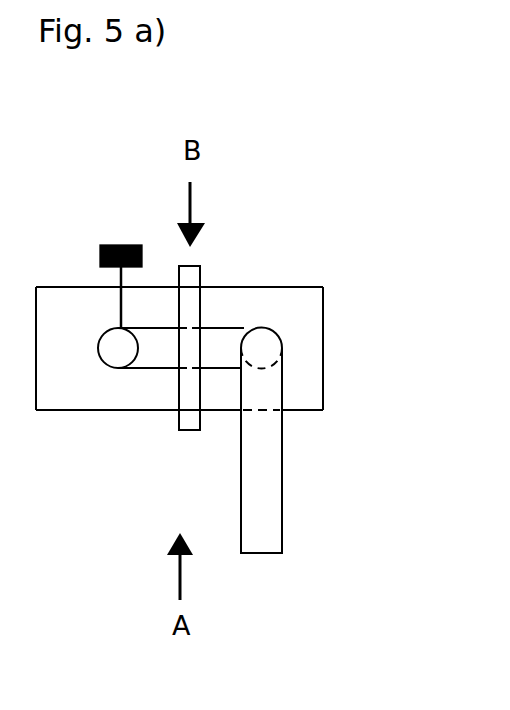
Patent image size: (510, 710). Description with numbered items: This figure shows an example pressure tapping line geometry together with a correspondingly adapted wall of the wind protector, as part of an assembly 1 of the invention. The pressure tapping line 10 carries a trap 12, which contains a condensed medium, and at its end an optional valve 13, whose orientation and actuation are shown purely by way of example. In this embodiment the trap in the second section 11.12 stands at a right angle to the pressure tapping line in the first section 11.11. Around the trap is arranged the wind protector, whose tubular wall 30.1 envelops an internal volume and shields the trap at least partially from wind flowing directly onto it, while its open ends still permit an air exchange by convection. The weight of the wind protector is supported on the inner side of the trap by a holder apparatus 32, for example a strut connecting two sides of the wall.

The assembly 1 is at (260, 421).
The pressure tapping line 10 is at (303, 512).
The first section 11.11 is at (509, 595).
The second section 11.12 is at (260, 373).
The trap 12 is at (202, 347).
The valve 13 is at (118, 245).
The tubular wall 30.1 is at (323, 327).
The holder apparatus 32 is at (190, 420).